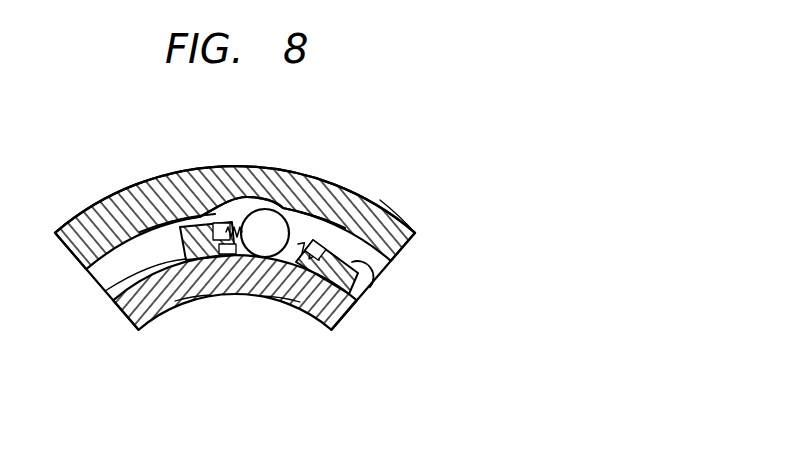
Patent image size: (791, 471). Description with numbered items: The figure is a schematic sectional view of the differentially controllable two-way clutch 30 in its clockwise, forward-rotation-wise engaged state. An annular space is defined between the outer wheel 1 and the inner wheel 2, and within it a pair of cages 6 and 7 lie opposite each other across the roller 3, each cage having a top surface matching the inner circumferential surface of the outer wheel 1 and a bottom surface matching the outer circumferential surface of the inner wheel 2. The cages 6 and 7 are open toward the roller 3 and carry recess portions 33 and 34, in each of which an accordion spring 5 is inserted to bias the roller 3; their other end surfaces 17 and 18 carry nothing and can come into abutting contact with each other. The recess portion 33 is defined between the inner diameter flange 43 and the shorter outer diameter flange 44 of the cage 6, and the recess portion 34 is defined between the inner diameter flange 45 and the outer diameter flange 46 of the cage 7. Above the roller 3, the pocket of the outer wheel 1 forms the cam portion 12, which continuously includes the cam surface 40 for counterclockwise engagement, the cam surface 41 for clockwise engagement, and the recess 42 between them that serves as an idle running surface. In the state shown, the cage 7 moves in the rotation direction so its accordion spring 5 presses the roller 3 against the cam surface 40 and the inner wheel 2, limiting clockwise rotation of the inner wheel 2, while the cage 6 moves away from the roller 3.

The outer wheel 1 is at (408, 222).
The inner wheel 2 is at (314, 312).
The roller 3 is at (290, 204).
The accordion spring 5 is at (222, 236).
The cage 6 is at (364, 257).
The cage 7 is at (190, 212).
The cam portion 12 is at (263, 228).
The end surface 17 is at (358, 280).
The end surface 18 is at (104, 290).
The two-way clutch 30 is at (377, 122).
The recess portion 33 is at (354, 296).
The recess portion 34 is at (221, 258).
The cam surface 40 is at (315, 232).
The cam surface 41 is at (212, 213).
The recess 42 is at (249, 192).
The inner diameter flange 43 is at (289, 303).
The outer diameter flange 44 is at (393, 230).
The inner diameter flange 45 is at (178, 238).
The outer diameter flange 46 is at (193, 298).